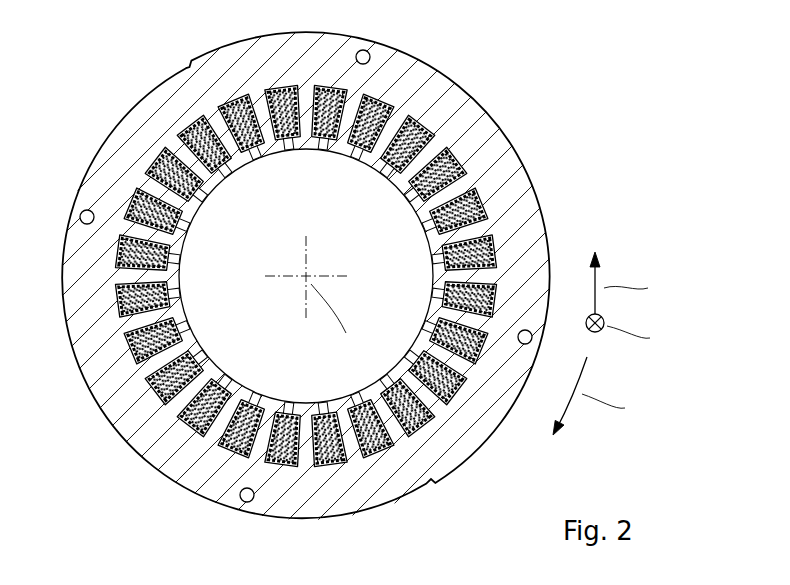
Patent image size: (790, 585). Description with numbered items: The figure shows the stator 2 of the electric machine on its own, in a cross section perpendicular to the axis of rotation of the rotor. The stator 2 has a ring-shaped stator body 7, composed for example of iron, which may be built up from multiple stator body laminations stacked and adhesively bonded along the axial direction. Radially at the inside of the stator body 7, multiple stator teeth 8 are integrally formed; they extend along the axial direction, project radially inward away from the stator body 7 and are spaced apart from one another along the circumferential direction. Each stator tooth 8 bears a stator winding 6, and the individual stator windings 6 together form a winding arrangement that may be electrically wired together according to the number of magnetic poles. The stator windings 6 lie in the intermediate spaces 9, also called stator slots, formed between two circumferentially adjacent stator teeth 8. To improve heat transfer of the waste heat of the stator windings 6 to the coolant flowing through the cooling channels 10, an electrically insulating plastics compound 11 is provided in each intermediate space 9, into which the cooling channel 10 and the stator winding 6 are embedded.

The stator 2 is at (395, 292).
The stator winding 6 is at (183, 133).
The stator body 7 is at (452, 84).
The stator tooth 8 is at (268, 140).
The intermediate space 9 is at (305, 275).
The cooling channel 10 is at (305, 237).
The plastics compound 11 is at (305, 275).